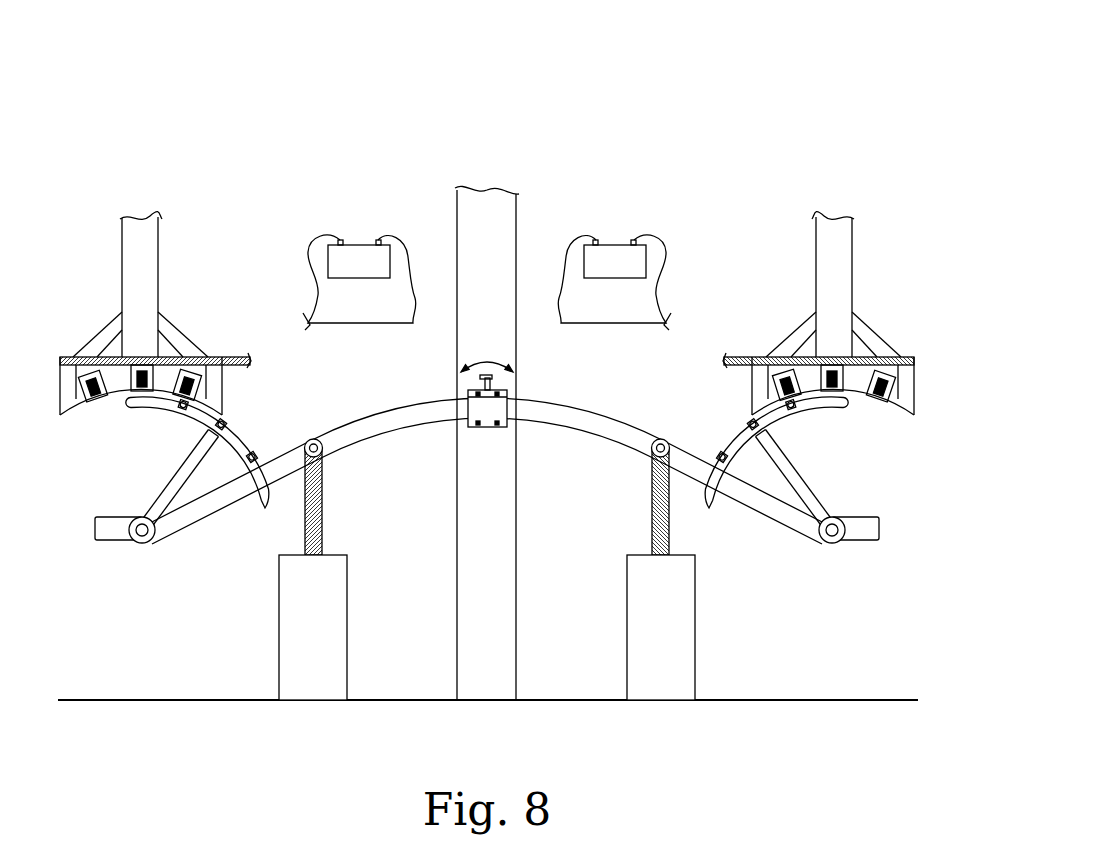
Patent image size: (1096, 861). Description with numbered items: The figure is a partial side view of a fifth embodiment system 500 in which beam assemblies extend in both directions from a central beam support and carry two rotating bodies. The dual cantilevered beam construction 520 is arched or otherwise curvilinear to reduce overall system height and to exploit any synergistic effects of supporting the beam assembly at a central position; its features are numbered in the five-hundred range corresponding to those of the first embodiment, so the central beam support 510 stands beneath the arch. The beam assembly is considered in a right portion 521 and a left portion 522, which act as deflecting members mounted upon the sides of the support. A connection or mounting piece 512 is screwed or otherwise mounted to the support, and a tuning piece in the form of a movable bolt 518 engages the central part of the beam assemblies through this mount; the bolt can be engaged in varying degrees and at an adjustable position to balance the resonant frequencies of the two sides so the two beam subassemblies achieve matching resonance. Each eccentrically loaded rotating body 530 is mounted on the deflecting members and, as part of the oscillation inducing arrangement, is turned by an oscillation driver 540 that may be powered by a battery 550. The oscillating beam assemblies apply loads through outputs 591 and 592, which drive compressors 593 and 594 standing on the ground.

The fifth embodiment system 500 is at (718, 66).
The central column 510 is at (458, 601).
The mount 512 is at (495, 428).
The pivot bolt 518 is at (497, 383).
The dual cantilevered beam construction 520 is at (362, 406).
The right portion of deflecting member 521 is at (869, 542).
The left portion of deflecting member 522 is at (105, 542).
The rotating body 530 is at (155, 454).
The oscillation driver 540 is at (70, 340).
The battery 550 is at (358, 240).
The output 591 is at (322, 497).
The output 592 is at (652, 497).
The compressor 593 is at (279, 628).
The compressor 594 is at (627, 628).